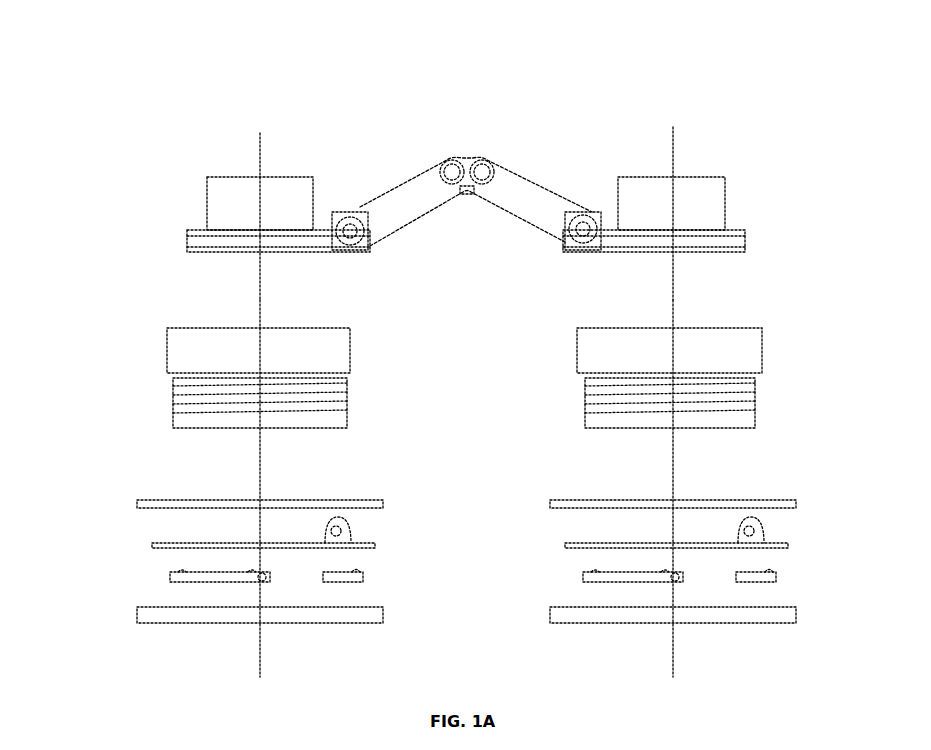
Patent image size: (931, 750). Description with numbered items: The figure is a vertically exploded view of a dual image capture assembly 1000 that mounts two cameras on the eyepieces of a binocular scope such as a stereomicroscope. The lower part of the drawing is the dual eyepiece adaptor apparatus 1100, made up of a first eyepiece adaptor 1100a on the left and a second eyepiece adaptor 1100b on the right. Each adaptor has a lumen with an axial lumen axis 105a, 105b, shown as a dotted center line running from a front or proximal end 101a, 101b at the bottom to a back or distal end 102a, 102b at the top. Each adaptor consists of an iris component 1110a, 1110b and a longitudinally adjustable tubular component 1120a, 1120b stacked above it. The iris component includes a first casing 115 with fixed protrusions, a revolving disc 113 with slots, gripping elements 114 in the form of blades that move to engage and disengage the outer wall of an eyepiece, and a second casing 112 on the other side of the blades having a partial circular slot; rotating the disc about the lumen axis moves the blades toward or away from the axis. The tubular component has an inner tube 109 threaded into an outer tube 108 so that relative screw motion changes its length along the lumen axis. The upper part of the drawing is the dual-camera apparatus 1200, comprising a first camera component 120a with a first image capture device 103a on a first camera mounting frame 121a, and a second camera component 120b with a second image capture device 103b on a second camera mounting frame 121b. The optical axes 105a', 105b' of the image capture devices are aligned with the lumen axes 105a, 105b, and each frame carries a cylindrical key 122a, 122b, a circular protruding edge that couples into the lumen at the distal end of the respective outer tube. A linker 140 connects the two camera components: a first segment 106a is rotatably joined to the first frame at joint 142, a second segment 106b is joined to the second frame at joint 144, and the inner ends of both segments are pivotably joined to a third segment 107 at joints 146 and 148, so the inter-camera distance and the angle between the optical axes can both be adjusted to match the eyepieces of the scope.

The dual image capture assembly 1000 is at (296, 112).
The linker 140 is at (398, 140).
The dual-camera apparatus 1200 is at (117, 157).
The first camera component 120a is at (180, 193).
The second camera component 120b is at (635, 158).
The first image capture device 103a is at (235, 176).
The second image capture device 103b is at (690, 176).
The first camera mounting frame 121a is at (198, 251).
The second camera mounting frame 121b is at (738, 252).
The cylindrical key 122a is at (305, 254).
The cylindrical key 122b is at (640, 253).
The joint 142 is at (350, 230).
The joint 144 is at (583, 228).
The joint 146 is at (449, 163).
The joint 148 is at (485, 164).
The third segment 107 is at (467, 194).
The first segment 106a is at (418, 212).
The second segment 106b is at (522, 208).
The optical axis 105a' is at (309, 219).
The optical axis 105b' is at (629, 216).
The lumen axis 105a is at (307, 488).
The lumen axis 105b is at (627, 488).
The dual eyepiece adaptor apparatus 1100 is at (73, 635).
The eyepiece adaptor 1100a is at (105, 330).
The eyepiece adaptor 1100b is at (833, 630).
The longitudinally adjustable tubular component 1120a is at (155, 332).
The longitudinally adjustable tubular component 1120b is at (778, 332).
The iris component 1110a is at (135, 500).
The iris component 1110b is at (805, 623).
The distal end 102a is at (187, 327).
The distal end 102b is at (732, 327).
The outer tube 108 is at (167, 353).
The inner tube 109 is at (173, 398).
The second casing 112 is at (466, 504).
The revolving disc 113 is at (470, 536).
The gripping elements 114 is at (473, 578).
The first casing 115 is at (466, 614).
The proximal end 101a is at (175, 624).
The proximal end 101b is at (760, 624).